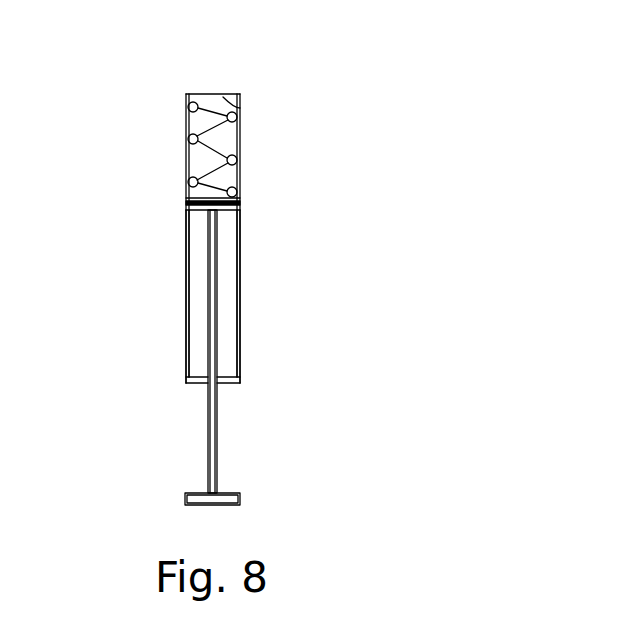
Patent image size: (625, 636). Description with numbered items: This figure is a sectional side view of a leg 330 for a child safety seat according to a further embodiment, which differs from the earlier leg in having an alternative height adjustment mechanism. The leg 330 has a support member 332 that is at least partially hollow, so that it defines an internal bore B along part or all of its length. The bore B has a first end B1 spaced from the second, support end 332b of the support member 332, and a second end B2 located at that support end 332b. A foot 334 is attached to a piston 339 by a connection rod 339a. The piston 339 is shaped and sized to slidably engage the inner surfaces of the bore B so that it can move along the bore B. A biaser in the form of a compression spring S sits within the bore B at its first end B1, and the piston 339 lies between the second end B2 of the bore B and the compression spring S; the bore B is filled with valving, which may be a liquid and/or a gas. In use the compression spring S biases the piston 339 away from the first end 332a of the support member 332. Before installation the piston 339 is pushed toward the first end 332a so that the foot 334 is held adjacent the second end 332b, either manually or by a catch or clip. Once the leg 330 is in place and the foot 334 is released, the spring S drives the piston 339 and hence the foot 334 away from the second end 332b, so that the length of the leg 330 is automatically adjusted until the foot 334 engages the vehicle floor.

The leg 330 is at (364, 152).
The support member 332 is at (186, 283).
The first end of the support member 332a is at (205, 94).
The second, support end of the support member 332b is at (232, 383).
The compression spring S is at (207, 150).
The internal bore B is at (226, 297).
The first end of the bore B1 is at (199, 375).
The second end of the bore B2 is at (240, 108).
The piston 339 is at (269, 207).
The connection rod 339a is at (208, 408).
The foot 334 is at (241, 497).